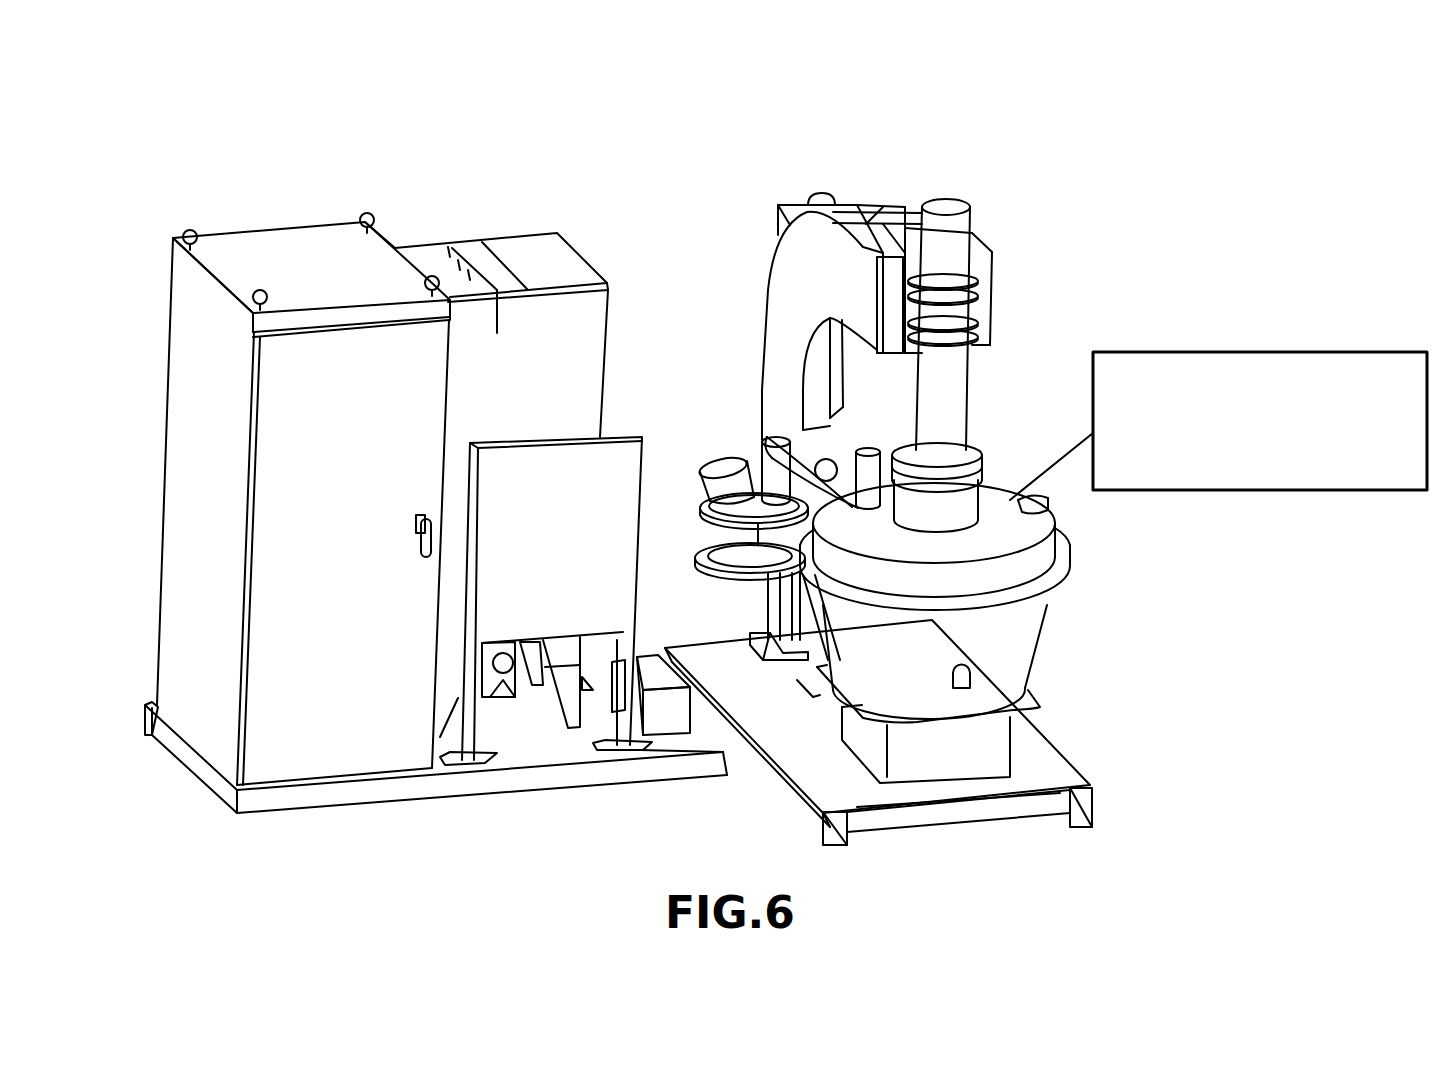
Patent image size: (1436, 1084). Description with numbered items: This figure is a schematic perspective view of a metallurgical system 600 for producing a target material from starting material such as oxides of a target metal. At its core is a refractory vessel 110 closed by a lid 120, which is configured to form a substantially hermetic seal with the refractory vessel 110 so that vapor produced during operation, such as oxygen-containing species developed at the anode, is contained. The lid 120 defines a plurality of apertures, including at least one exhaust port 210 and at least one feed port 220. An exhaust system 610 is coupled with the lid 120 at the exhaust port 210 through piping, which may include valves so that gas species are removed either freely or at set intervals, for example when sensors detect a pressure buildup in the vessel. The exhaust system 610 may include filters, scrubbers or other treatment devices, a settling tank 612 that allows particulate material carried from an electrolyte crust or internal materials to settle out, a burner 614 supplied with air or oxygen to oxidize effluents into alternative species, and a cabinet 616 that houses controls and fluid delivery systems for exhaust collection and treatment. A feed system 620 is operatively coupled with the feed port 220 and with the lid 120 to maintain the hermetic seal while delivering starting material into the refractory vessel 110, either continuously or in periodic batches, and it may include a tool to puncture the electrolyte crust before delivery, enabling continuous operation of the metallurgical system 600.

The refractory vessel 110 is at (1040, 648).
The lid 120 is at (1060, 565).
The exhaust port 210 is at (772, 442).
The feed port 220 is at (990, 513).
The metallurgical system 600 is at (374, 152).
The exhaust system 610 is at (286, 233).
The settling tank 612 is at (745, 552).
The burner 614 is at (556, 226).
The cabinet 616 is at (156, 485).
The feed system 620 is at (1290, 352).